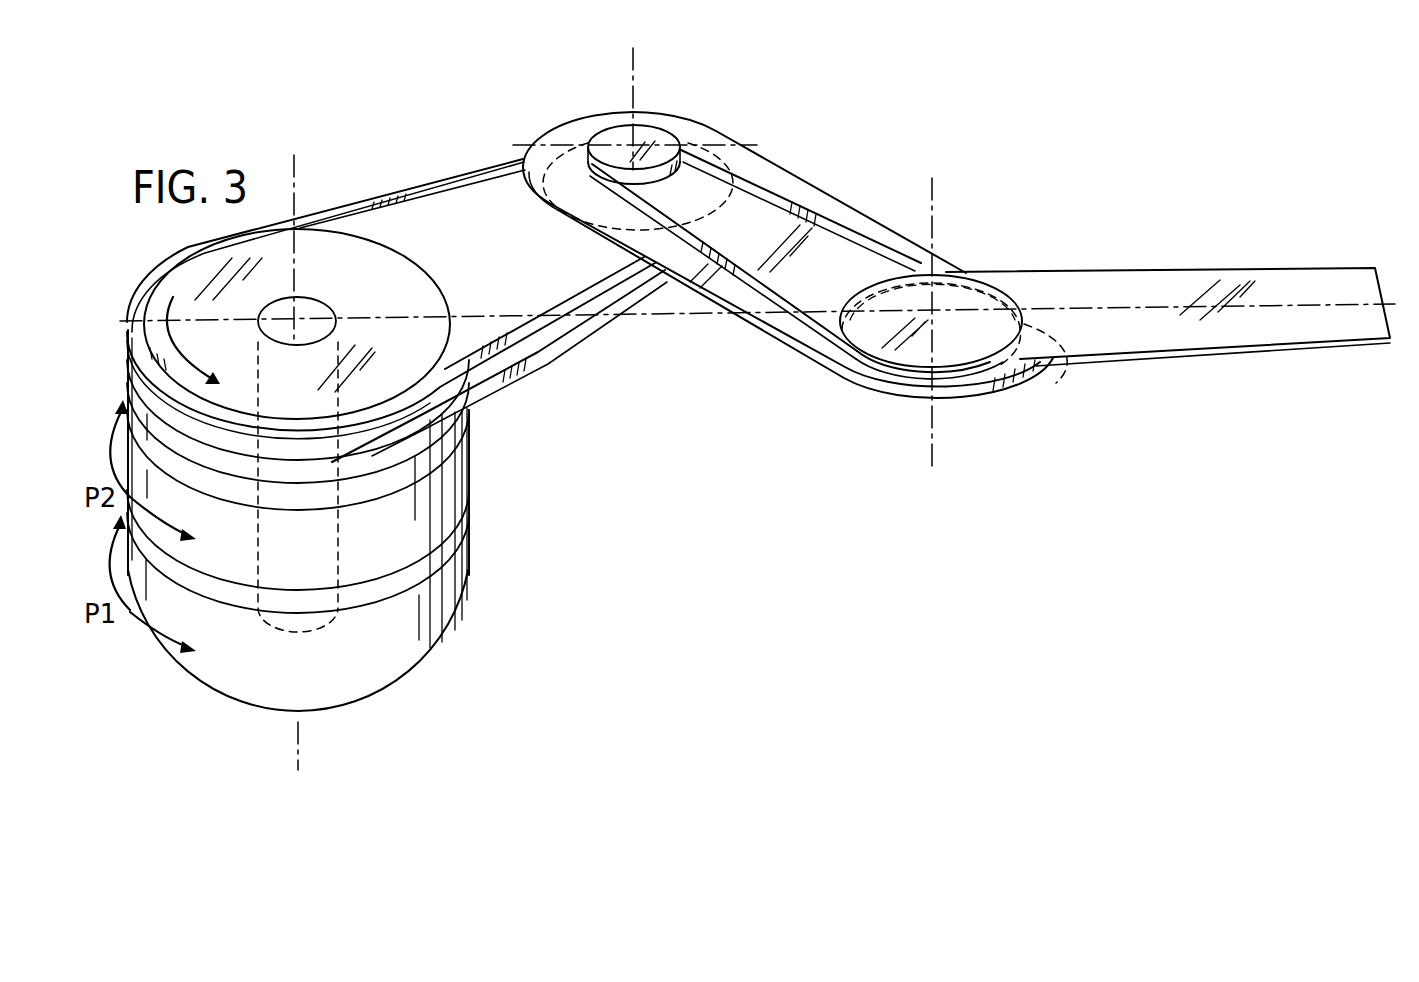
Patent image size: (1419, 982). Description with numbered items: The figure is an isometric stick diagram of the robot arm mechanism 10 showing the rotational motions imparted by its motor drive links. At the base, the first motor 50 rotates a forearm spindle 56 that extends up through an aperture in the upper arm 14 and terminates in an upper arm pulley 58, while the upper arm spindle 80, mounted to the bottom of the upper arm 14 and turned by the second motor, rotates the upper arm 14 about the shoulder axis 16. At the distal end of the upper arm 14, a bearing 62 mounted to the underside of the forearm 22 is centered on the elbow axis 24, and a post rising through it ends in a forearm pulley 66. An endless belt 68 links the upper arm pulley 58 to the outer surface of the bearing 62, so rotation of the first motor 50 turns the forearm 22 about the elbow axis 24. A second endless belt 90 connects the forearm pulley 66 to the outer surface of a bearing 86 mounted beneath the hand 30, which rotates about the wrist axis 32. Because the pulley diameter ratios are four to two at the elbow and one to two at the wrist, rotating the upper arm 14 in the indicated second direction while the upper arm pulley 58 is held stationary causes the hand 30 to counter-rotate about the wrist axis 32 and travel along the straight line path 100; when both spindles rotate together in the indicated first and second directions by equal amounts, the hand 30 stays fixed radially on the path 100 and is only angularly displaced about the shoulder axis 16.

The robot arm mechanism 10 is at (183, 714).
The upper arm 14 is at (538, 352).
The shoulder axis 16 is at (294, 177).
The forearm 22 is at (790, 347).
The elbow axis 24 is at (633, 62).
The hand 30 is at (1297, 349).
The wrist axis 32 is at (932, 205).
The first motor 50 is at (432, 645).
The forearm spindle 56 is at (339, 563).
The upper arm pulley 58 is at (386, 272).
The bearing 62 is at (598, 233).
The forearm pulley 66 is at (655, 137).
The endless belt 68 is at (437, 180).
The upper arm spindle 80 is at (466, 450).
The bearing 86 is at (1056, 383).
The endless belt 90 is at (788, 202).
The straight line path 100 is at (1393, 302).